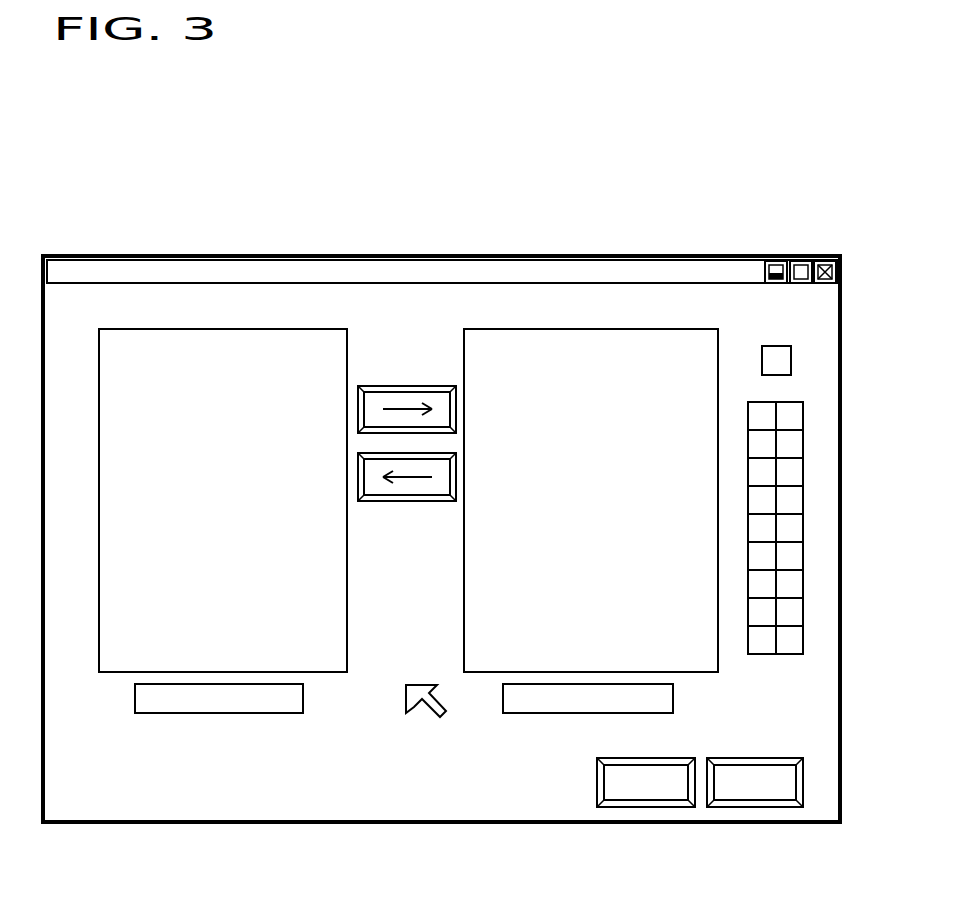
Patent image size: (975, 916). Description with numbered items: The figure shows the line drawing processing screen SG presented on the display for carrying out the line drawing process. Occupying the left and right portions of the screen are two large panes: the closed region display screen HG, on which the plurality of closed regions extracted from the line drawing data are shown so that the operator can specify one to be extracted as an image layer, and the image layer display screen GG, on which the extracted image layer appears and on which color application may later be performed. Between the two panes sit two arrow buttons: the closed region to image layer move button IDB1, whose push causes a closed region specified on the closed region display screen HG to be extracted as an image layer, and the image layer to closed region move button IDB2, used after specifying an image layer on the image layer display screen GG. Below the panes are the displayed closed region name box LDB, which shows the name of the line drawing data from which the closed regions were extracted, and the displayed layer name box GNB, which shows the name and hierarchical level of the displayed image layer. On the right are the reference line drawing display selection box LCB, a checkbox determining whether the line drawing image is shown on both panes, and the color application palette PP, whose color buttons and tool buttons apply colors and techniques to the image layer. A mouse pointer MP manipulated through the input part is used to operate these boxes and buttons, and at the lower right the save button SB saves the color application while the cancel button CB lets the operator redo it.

The line drawing processing screen SG is at (178, 198).
The closed region display screen HG is at (238, 350).
The image layer display screen GG is at (587, 345).
The closed region to image layer move button IDB1 is at (406, 398).
The image layer to closed region move button IDB2 is at (410, 487).
The reference line drawing display selection box LCB is at (778, 362).
The color application palette PP is at (792, 415).
The displayed closed region name box LDB is at (214, 701).
The displayed layer name box GNB is at (534, 700).
The mouse pointer MP is at (408, 713).
The save button SB is at (675, 790).
The cancel button CB is at (781, 790).